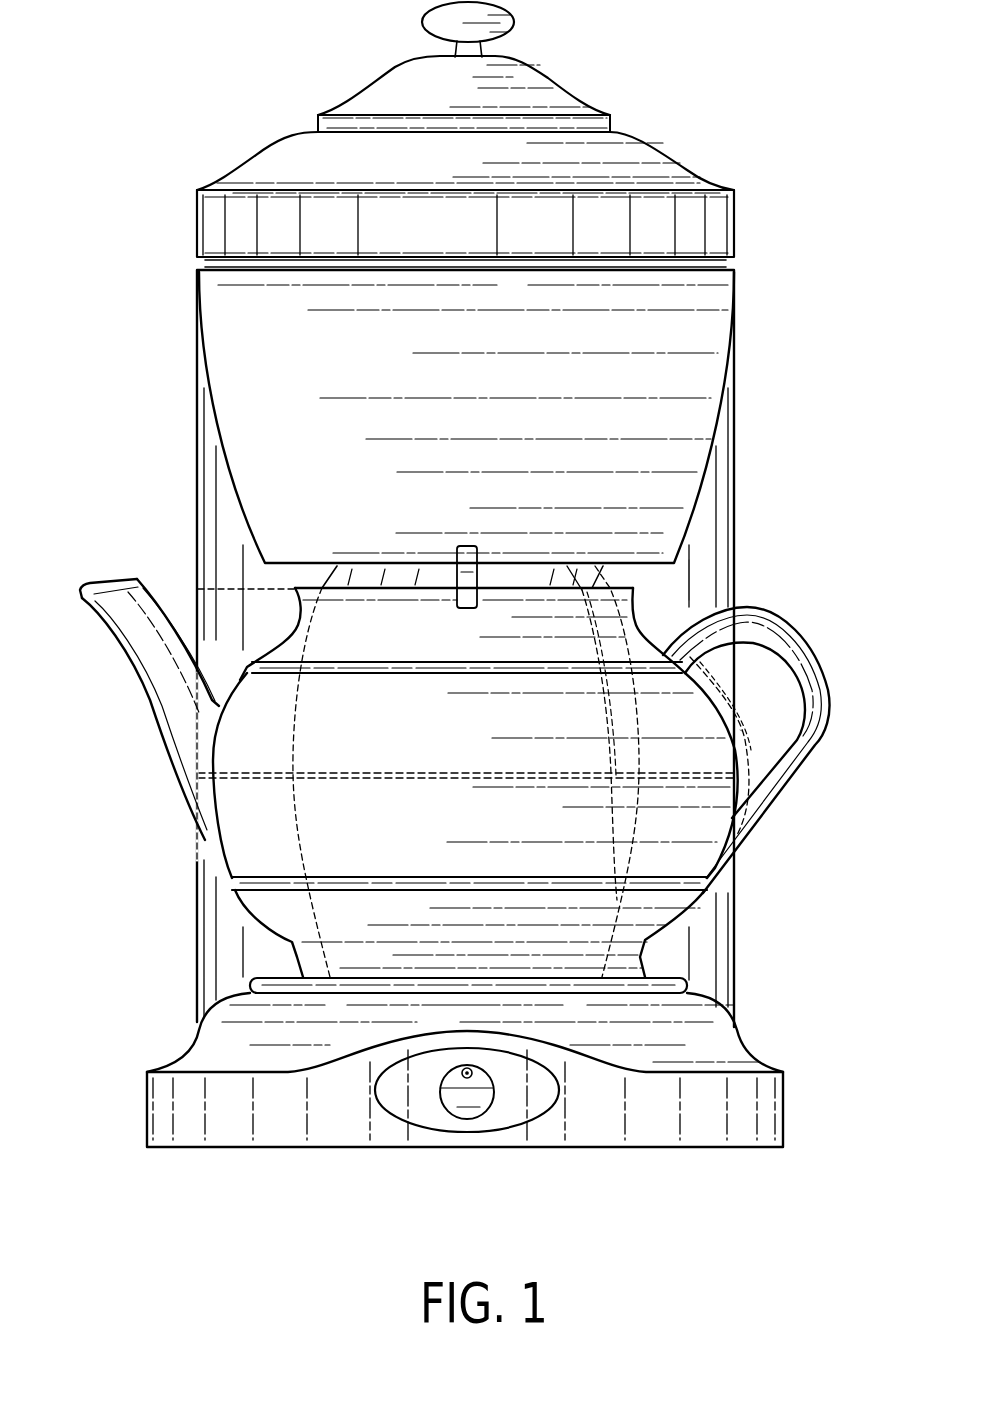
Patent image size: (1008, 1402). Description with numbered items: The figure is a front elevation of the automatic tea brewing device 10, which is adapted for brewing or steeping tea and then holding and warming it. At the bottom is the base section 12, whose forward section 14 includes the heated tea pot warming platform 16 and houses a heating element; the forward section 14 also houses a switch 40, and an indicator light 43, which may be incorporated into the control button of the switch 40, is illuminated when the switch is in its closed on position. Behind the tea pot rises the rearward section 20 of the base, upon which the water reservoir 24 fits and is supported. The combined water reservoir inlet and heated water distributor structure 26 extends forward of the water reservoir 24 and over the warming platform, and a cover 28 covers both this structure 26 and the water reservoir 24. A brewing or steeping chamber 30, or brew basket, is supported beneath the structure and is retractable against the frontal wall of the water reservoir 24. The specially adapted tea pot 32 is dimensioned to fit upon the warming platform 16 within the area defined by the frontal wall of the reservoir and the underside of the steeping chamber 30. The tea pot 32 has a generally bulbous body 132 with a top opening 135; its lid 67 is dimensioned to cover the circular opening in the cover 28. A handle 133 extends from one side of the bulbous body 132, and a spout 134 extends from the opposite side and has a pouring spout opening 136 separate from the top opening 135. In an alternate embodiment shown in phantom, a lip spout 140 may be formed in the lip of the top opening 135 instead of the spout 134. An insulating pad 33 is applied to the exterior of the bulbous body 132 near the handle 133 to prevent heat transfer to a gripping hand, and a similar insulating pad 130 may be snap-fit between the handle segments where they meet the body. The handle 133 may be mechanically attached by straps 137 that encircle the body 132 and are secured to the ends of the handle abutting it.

The automatic tea brewing device 10 is at (310, 82).
The lid 67 is at (527, 82).
The cover 28 is at (684, 159).
The combined water reservoir inlet and heated water distributor structure 26 is at (741, 226).
The brewing or steeping chamber 30 is at (275, 414).
The rearward section 20 is at (738, 500).
The water reservoir 24 is at (705, 547).
The top opening 135 is at (622, 582).
The lip spout 140 is at (254, 593).
The bulbous body 132 is at (497, 833).
The tea pot 32 is at (403, 729).
The straps 137 is at (381, 667).
The spout 134 is at (168, 678).
The pouring spout opening 136 is at (108, 577).
The handle 133 is at (803, 661).
The insulating pad 33 is at (740, 730).
The insulating pad 130 is at (748, 760).
The tea pot warming platform 16 is at (519, 975).
The base section 12 is at (747, 1048).
The forward section 14 is at (163, 1105).
The switch 40 is at (463, 1097).
The indicator light 43 is at (472, 1073).